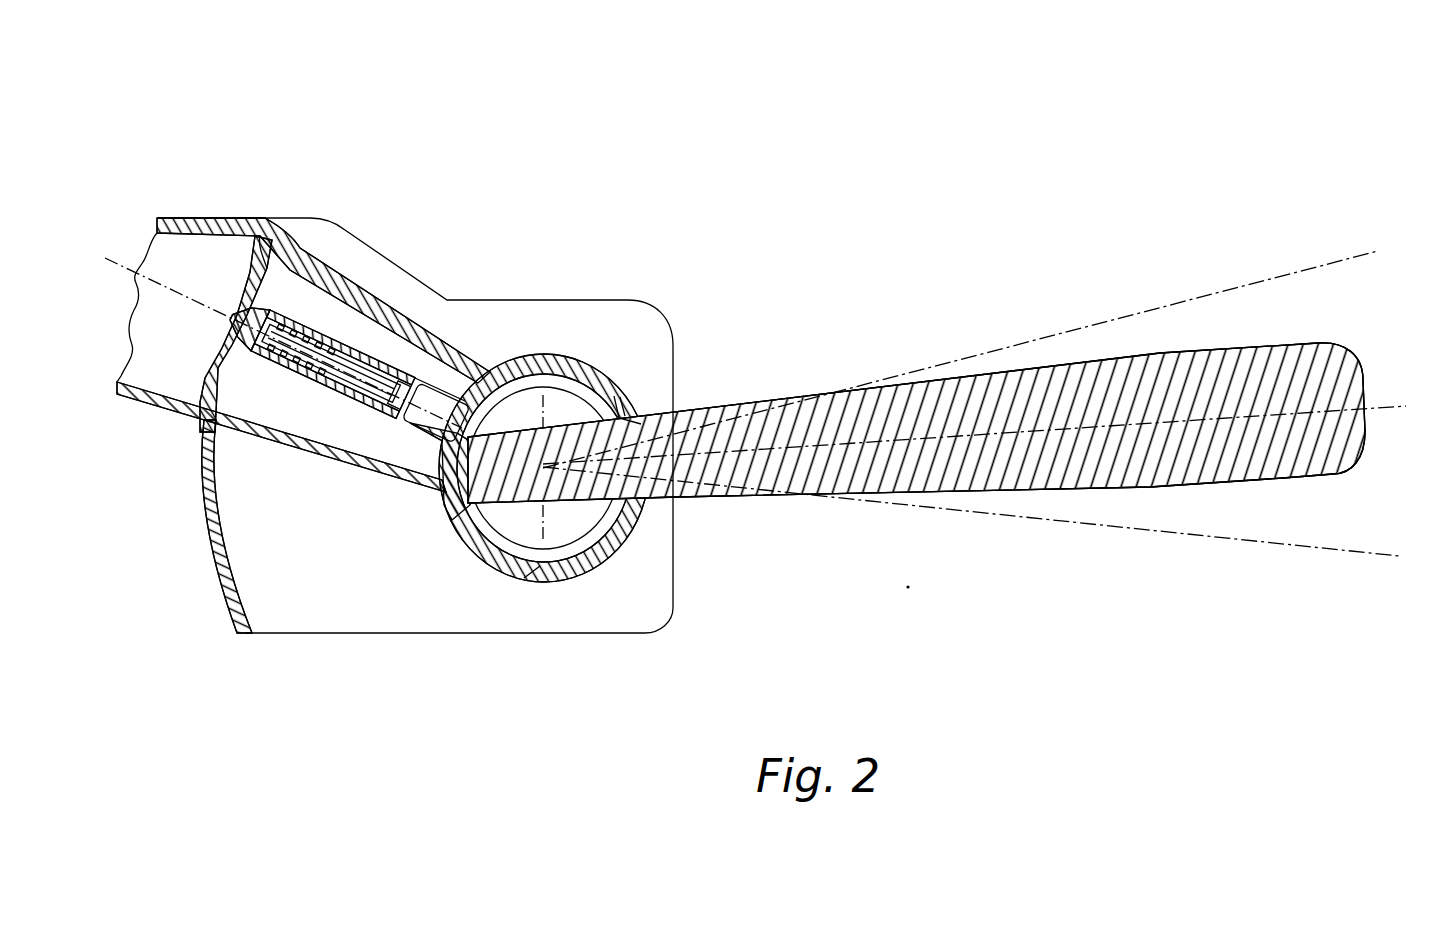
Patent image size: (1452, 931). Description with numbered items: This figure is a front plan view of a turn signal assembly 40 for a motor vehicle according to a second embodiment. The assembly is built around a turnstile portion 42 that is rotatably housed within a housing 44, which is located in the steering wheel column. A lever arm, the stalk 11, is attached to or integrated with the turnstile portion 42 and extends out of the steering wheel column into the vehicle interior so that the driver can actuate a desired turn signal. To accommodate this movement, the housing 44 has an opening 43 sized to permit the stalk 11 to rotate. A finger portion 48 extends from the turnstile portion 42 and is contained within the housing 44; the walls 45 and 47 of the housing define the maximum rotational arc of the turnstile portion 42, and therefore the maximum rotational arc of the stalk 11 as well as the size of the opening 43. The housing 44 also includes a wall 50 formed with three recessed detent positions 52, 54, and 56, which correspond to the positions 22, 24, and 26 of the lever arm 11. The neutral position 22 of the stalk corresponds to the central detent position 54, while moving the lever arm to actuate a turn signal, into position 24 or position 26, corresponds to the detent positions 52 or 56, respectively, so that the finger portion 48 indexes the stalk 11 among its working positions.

The stalk 11 is at (1283, 479).
The neutral position 22 is at (1400, 405).
The position 24 is at (1297, 548).
The position 26 is at (1342, 258).
The turn signal assembly 40 is at (985, 170).
The turnstile portion 42 is at (568, 380).
The opening 43 is at (640, 412).
The housing 44 is at (525, 578).
The wall 45 is at (383, 292).
The wall 47 is at (290, 448).
The finger portion 48 is at (370, 414).
The wall 50 is at (213, 352).
The detent position 52 is at (262, 258).
The detent position 54 is at (232, 312).
The detent position 56 is at (222, 378).